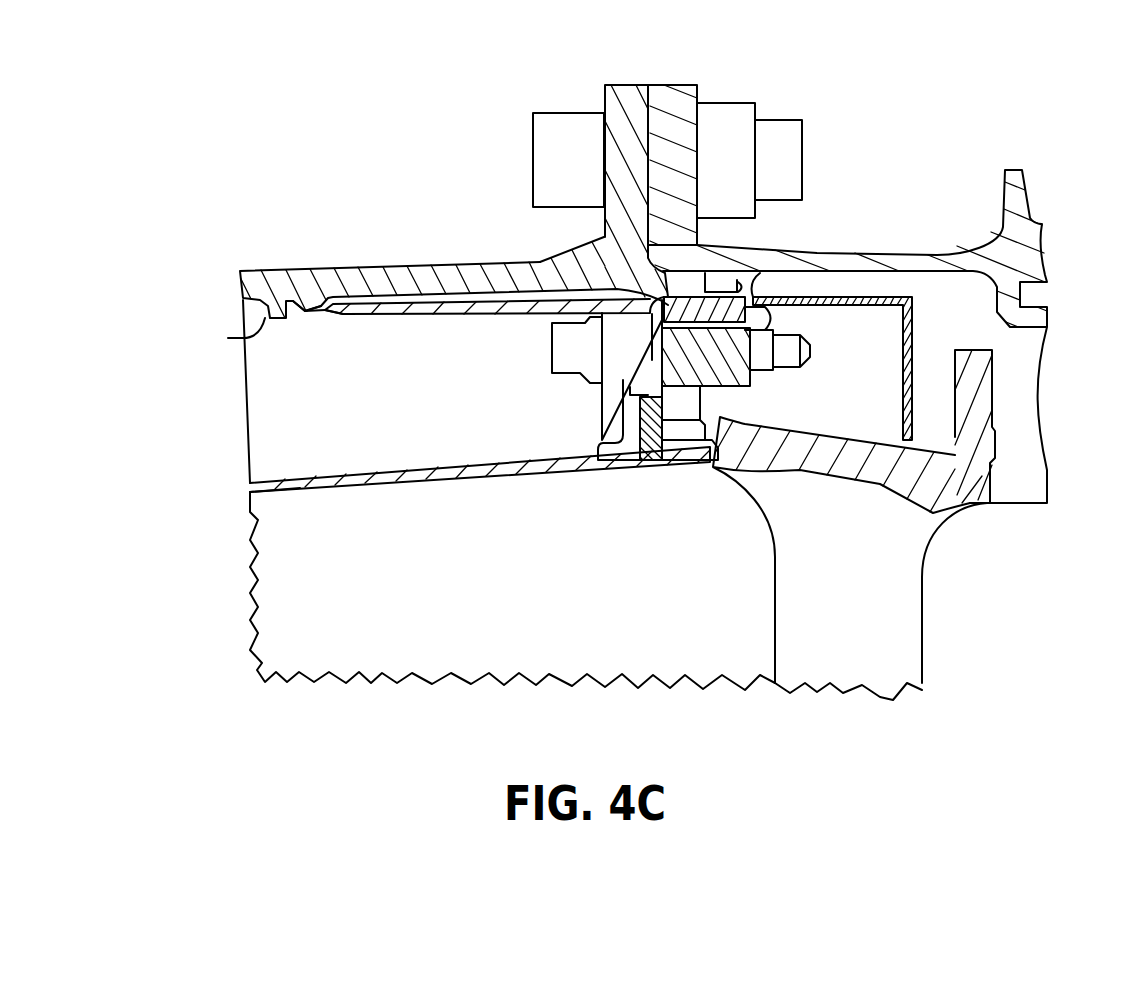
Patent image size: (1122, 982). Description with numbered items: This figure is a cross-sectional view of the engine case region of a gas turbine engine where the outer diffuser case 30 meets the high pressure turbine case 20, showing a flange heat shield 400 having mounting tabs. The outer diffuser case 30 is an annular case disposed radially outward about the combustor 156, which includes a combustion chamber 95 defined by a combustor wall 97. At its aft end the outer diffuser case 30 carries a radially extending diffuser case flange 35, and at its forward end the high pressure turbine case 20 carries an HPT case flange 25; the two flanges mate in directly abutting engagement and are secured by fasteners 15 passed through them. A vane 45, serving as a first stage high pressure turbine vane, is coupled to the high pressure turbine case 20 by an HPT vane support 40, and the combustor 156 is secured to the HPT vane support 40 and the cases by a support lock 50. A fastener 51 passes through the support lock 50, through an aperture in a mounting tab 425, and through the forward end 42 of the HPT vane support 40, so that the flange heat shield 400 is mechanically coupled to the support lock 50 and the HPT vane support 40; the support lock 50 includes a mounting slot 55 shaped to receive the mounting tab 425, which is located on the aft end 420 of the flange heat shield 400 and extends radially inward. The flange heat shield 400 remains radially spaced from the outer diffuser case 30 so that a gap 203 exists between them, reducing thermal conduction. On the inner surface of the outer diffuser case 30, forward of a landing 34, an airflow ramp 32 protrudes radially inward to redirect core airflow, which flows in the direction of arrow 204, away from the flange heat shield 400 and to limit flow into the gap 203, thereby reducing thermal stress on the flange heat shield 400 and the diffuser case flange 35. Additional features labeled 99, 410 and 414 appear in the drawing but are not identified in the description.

The fasteners 15 is at (548, 155).
The high pressure turbine case 20 is at (922, 262).
The HPT case flange 25 is at (700, 97).
The outer diffuser case 30 is at (412, 272).
The airflow ramp 32 is at (246, 337).
The landing 34 is at (312, 309).
The diffuser case flange 35 is at (626, 122).
The HPT vane support 40 is at (851, 297).
The forward end 42 is at (715, 374).
The vane 45 is at (890, 600).
The support lock 50 is at (598, 460).
The fastener 51 is at (556, 368).
The mounting slot 55 is at (655, 340).
The combustion chamber 95 is at (436, 579).
The combustor wall 97 is at (280, 490).
The cavity 99 is at (440, 384).
The combustor 156 is at (465, 505).
The gap 203 is at (550, 296).
The arrow 204 is at (288, 390).
The flange heat shield 400 is at (490, 308).
The plate tab 410 is at (343, 314).
The plate edge 414 is at (323, 310).
The aft end 420 is at (770, 320).
The mounting tabs 425 is at (660, 368).